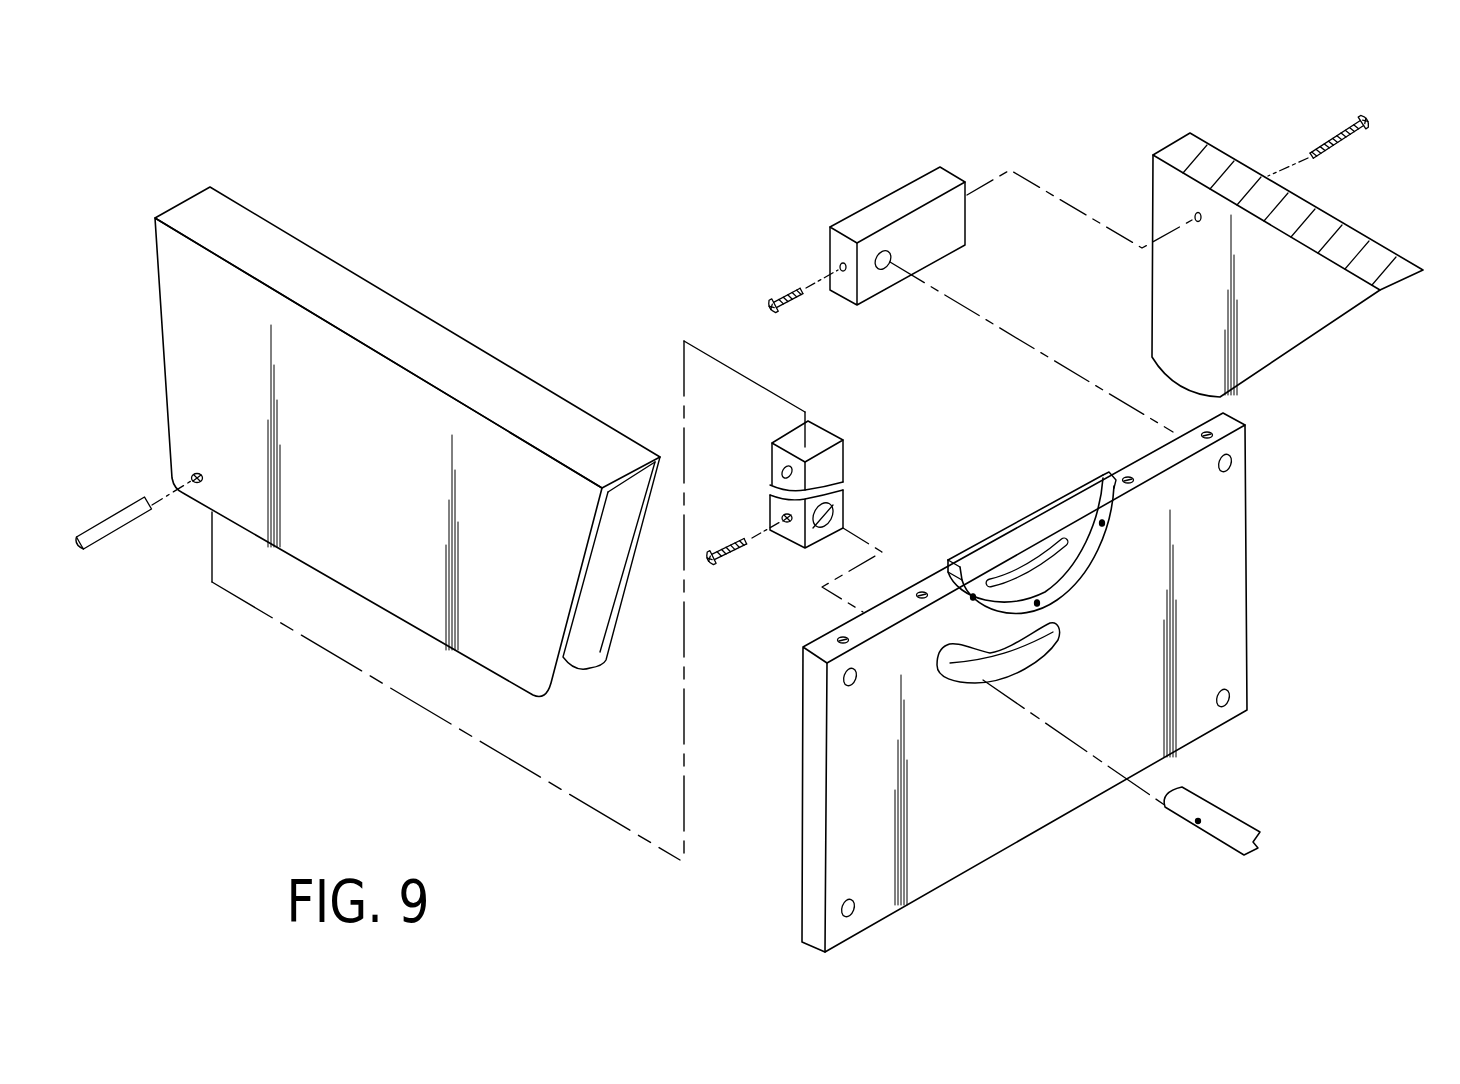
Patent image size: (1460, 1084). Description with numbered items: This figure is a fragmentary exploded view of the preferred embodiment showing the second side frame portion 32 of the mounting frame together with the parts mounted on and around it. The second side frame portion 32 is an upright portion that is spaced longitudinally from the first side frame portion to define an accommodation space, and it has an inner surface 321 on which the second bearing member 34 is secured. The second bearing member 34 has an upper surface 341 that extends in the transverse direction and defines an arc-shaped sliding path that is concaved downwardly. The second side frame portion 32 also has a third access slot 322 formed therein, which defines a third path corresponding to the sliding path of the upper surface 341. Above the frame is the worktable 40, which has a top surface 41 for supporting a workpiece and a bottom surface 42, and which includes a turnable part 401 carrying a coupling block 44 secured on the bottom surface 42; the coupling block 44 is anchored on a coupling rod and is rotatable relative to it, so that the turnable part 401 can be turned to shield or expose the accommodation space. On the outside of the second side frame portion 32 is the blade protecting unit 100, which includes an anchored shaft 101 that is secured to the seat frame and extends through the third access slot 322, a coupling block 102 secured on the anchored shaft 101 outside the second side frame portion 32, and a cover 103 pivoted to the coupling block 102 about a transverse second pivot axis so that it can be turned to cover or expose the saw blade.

The blade protecting unit 100 is at (407, 420).
The anchored shaft 101 is at (1199, 824).
The coupling block 102 is at (843, 460).
The cover 103 is at (383, 290).
The second side frame portion 32 is at (972, 682).
The inner surface 321 is at (852, 762).
The third access slot 322 is at (950, 663).
The second bearing member 34 is at (1130, 516).
The upper surface 341 is at (1083, 500).
The worktable 40 is at (1245, 228).
The turnable part 401 is at (1183, 147).
The top surface 41 is at (1246, 193).
The bottom surface 42 is at (1167, 197).
The coupling block 44 is at (890, 200).